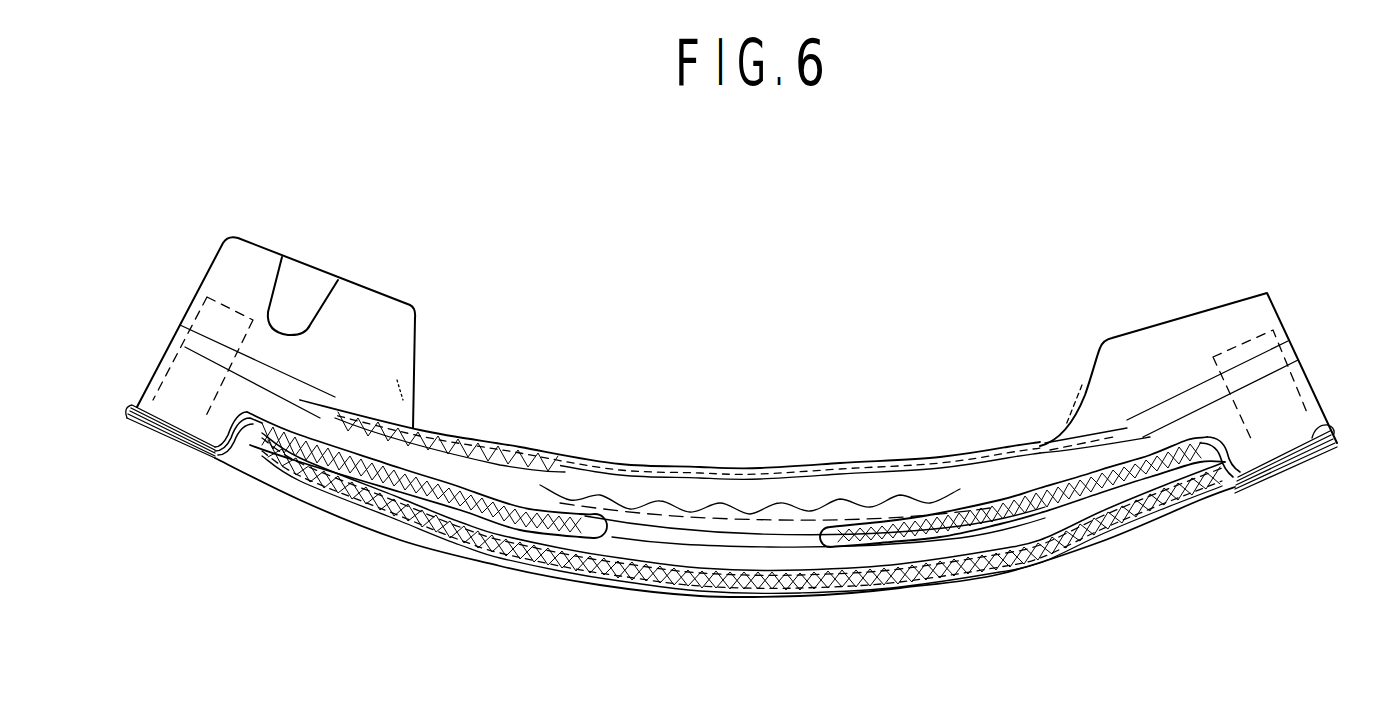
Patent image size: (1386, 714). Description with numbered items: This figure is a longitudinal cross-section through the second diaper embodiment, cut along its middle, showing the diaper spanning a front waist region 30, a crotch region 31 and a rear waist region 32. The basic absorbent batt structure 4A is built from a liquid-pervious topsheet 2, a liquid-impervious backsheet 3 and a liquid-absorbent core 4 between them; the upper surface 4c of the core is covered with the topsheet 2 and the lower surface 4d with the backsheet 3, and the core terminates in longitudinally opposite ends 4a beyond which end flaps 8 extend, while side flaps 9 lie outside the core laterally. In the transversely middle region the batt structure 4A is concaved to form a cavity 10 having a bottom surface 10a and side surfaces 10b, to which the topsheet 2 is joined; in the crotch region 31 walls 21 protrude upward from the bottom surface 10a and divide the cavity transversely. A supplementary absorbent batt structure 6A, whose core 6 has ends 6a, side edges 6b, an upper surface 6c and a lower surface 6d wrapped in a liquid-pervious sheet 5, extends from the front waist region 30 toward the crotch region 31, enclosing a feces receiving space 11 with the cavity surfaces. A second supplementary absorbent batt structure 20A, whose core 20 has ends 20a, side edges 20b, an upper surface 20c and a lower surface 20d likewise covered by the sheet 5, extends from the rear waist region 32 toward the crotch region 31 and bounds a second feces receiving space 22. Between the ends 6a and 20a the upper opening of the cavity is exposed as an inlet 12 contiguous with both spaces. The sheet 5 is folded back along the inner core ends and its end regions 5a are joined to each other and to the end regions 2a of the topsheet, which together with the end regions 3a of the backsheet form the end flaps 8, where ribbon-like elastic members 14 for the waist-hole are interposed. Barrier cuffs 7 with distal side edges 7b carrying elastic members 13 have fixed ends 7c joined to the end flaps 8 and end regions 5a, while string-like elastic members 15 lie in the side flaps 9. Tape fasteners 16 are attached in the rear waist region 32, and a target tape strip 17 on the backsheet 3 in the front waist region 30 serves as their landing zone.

The liquid-pervious topsheet 2 is at (678, 575).
The liquid-impervious backsheet 3 is at (645, 595).
The liquid-absorbent core 4 is at (742, 583).
The end regions of the topsheet 2a is at (147, 430).
The end regions of the backsheet 3a is at (170, 440).
The ends of the core 4a is at (237, 466).
The basic absorbent batt structure 4A is at (1022, 585).
The upper surface of the core 4c is at (1173, 515).
The lower surface of the core 4d is at (817, 593).
The liquid-pervious sheet 5 is at (575, 524).
The end regions of the liquid-pervious sheet 5a is at (137, 407).
The liquid-absorbent core 6 is at (1167, 460).
The ends of the core 6a is at (837, 537).
The supplementary absorbent batt structure 6A is at (1085, 556).
The side edges of the core 6b is at (998, 448).
The upper surface of the core 6c is at (1050, 485).
The lower surface of the core 6d is at (1033, 543).
The barrier cuffs 7 is at (683, 490).
The distal side edges 7b is at (720, 483).
The fixed ends 7c is at (197, 328).
The end flaps 8 is at (227, 400).
The side flaps 9 is at (1103, 372).
The cavity 10 is at (430, 533).
The bottom surface of the cavity 10a is at (523, 560).
The side surfaces of the cavity 10b is at (347, 513).
The feces receiving space 11 is at (957, 547).
The inlet 12 is at (753, 560).
The elastic members 13 is at (754, 460).
The ribbon-like elastic members 14 is at (142, 389).
The string-like elastic members 15 is at (427, 389).
The tape fasteners 16 is at (307, 272).
The target tape strip 17 is at (1110, 545).
The liquid-absorbent core 20 is at (445, 478).
The ends of the core 20a is at (265, 422).
The second supplementary absorbent batt structure 20A is at (410, 507).
The side edges of the core 20b is at (510, 448).
The upper surface of the core 20c is at (517, 500).
The lower surface of the core 20d is at (480, 550).
The walls 21 is at (805, 562).
The feces receiving space 22 is at (381, 512).
The front waist region 30 is at (1260, 193).
The crotch region 31 is at (443, 277).
The rear waist region 32 is at (443, 280).